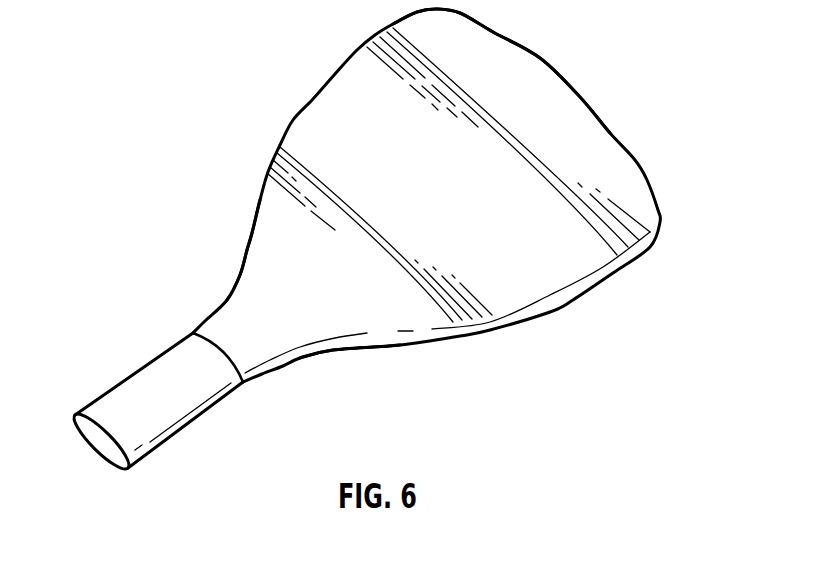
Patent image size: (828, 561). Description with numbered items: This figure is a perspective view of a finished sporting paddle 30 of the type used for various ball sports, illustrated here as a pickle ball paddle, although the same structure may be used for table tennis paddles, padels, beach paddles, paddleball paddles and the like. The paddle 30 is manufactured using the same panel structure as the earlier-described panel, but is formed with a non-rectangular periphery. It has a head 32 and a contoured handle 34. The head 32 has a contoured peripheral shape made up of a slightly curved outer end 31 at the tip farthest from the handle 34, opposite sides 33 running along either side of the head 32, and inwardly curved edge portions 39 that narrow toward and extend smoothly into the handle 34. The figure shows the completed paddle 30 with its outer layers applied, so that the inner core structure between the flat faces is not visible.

The paddle 30 is at (555, 313).
The curved outer end 31 is at (549, 64).
The head 32 is at (575, 104).
The opposite sides 33 is at (357, 52).
The contoured handle 34 is at (132, 390).
The inwardly curved edge portions 39 is at (247, 245).